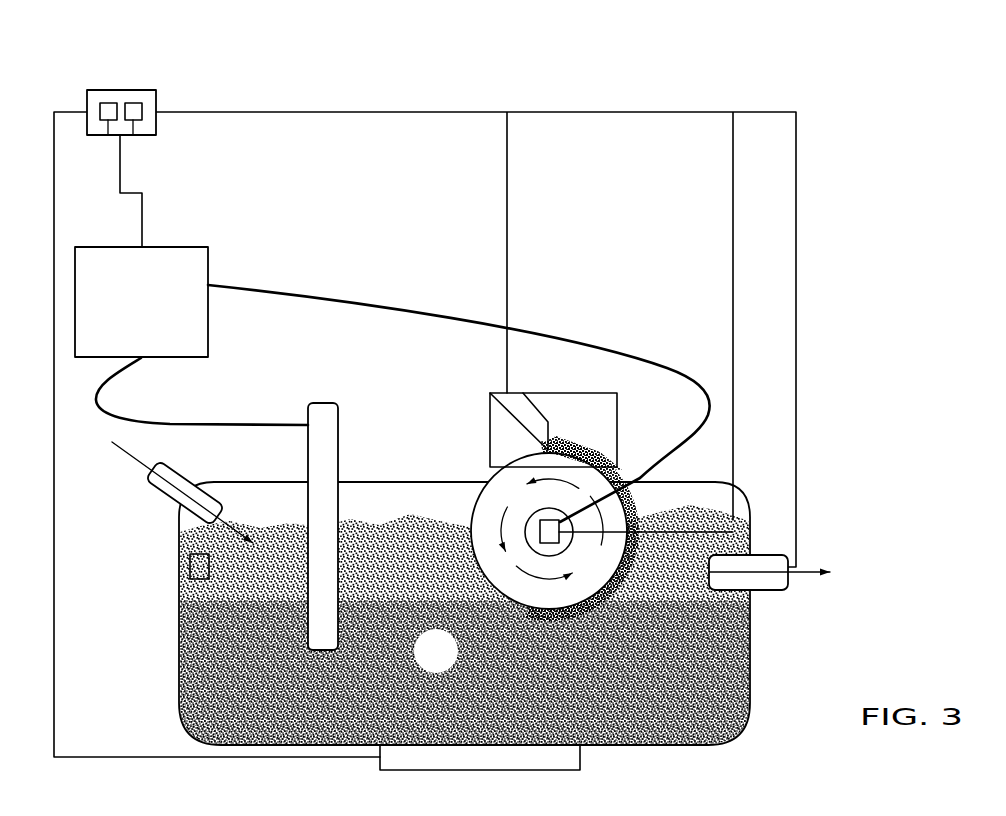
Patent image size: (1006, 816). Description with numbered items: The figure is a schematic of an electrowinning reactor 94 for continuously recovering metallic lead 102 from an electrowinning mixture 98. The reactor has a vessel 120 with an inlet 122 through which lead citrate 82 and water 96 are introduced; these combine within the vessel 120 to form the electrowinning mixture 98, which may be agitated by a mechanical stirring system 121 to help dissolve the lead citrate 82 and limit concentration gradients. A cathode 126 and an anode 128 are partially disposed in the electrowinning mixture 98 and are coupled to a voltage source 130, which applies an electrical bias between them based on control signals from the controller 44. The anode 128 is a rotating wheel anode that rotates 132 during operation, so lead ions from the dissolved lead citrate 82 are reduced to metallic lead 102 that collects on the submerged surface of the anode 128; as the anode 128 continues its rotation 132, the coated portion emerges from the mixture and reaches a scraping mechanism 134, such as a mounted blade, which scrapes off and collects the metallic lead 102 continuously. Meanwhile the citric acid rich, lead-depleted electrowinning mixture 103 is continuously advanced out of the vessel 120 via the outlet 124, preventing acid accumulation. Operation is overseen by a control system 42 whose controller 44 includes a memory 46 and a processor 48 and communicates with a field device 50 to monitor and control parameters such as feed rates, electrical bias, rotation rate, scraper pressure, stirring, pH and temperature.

The control system 42 is at (112, 98).
The controller 44 is at (103, 90).
The memory 46 is at (108, 135).
The processor 48 is at (133, 135).
The field device 50 is at (190, 562).
The lead citrate 82 is at (182, 486).
The water 96 is at (135, 457).
The electrowinning reactor 94 is at (429, 76).
The electrowinning mixture 98 is at (448, 663).
The metallic lead 102 is at (640, 491).
The lead-depleted electrowinning mixture 103 is at (803, 570).
The vessel 120 is at (752, 643).
The mechanical stirring system 121 is at (580, 751).
The inlet 122 is at (175, 513).
The outlet 124 is at (765, 591).
The cathode 126 is at (339, 443).
The anode 128 is at (492, 480).
The voltage source 130 is at (175, 247).
The rotation 132 is at (575, 489).
The scraping mechanism 134 is at (522, 411).